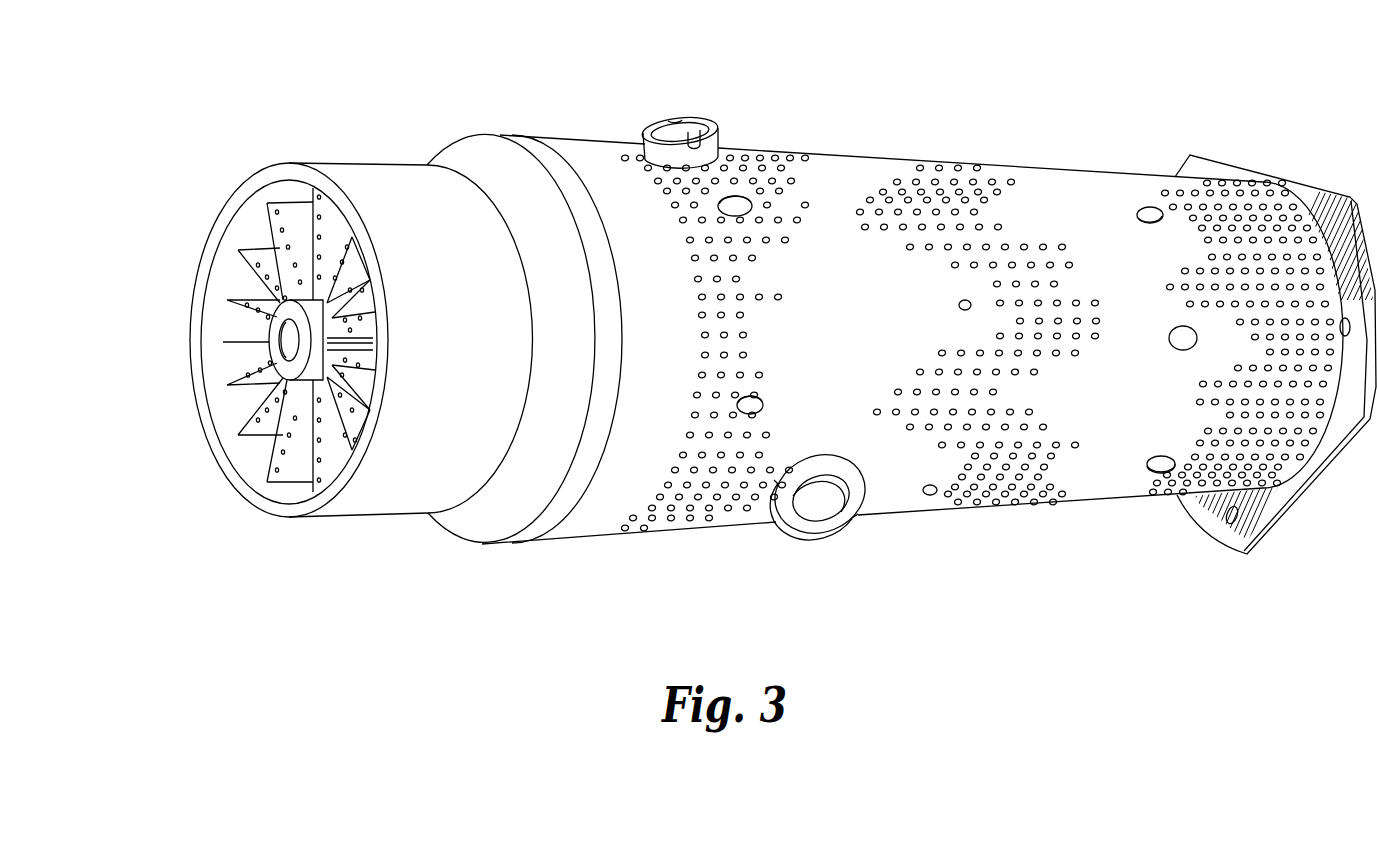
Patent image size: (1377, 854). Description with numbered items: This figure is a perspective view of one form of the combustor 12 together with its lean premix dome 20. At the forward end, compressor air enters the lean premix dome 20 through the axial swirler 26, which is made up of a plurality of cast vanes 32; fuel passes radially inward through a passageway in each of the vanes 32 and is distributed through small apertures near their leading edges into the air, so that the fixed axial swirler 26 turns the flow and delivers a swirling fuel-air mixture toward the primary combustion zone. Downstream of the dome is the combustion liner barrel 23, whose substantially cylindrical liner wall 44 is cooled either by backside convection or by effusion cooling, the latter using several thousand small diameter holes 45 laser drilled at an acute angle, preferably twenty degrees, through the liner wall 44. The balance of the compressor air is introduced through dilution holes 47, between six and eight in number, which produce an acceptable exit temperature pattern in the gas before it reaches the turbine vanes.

The combustor 12 is at (1066, 103).
The lean premix dome 20 is at (397, 515).
The combustion liner barrel 23 is at (861, 158).
The axial swirler 26 is at (150, 369).
The cast vanes 32 is at (293, 467).
The liner wall 44 is at (578, 480).
The small diameter holes 45 is at (718, 508).
The dilution holes 47 is at (1146, 480).